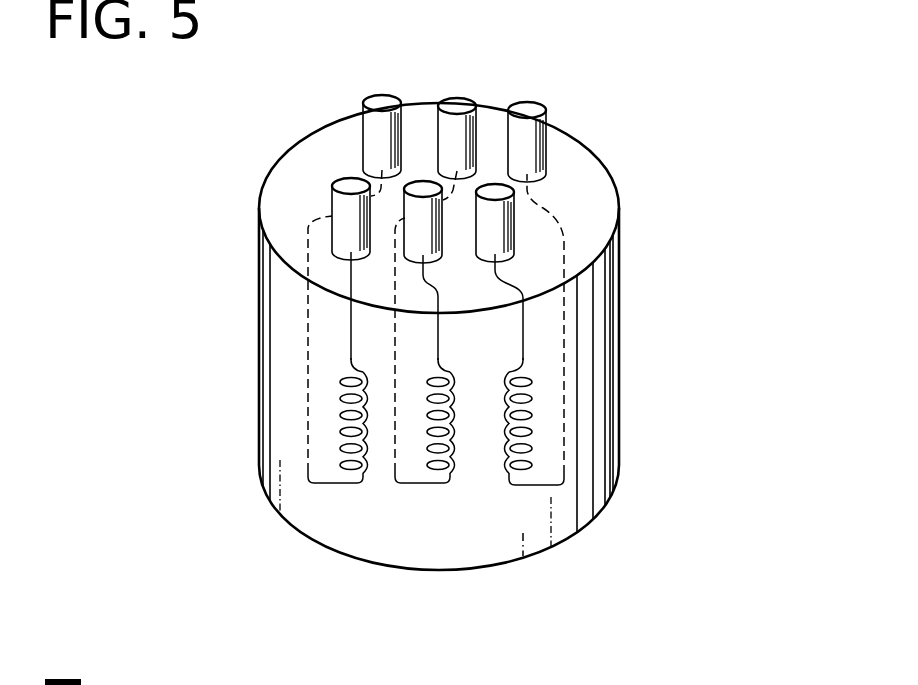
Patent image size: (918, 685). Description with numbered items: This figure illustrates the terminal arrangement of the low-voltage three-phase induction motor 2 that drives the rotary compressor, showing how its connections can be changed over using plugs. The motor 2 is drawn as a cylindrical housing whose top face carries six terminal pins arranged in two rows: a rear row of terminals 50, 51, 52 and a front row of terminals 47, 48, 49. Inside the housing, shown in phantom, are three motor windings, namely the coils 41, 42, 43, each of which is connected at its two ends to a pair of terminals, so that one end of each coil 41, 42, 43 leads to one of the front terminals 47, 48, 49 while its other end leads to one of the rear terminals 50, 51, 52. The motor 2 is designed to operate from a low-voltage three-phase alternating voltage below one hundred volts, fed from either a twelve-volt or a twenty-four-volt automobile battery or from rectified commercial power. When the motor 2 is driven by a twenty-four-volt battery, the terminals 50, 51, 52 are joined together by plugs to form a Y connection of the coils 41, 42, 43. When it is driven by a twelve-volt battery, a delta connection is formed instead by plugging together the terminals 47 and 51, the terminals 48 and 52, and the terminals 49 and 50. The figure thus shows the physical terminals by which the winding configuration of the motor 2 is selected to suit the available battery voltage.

The low-voltage three-phase induction motor 2 is at (600, 316).
The motor winding coil 41 is at (352, 488).
The motor winding coil 42 is at (447, 487).
The motor winding coil 43 is at (513, 487).
The terminal 47 is at (332, 207).
The terminal 48 is at (442, 232).
The terminal 49 is at (514, 227).
The terminal 50 is at (383, 96).
The terminal 51 is at (457, 99).
The terminal 52 is at (536, 102).